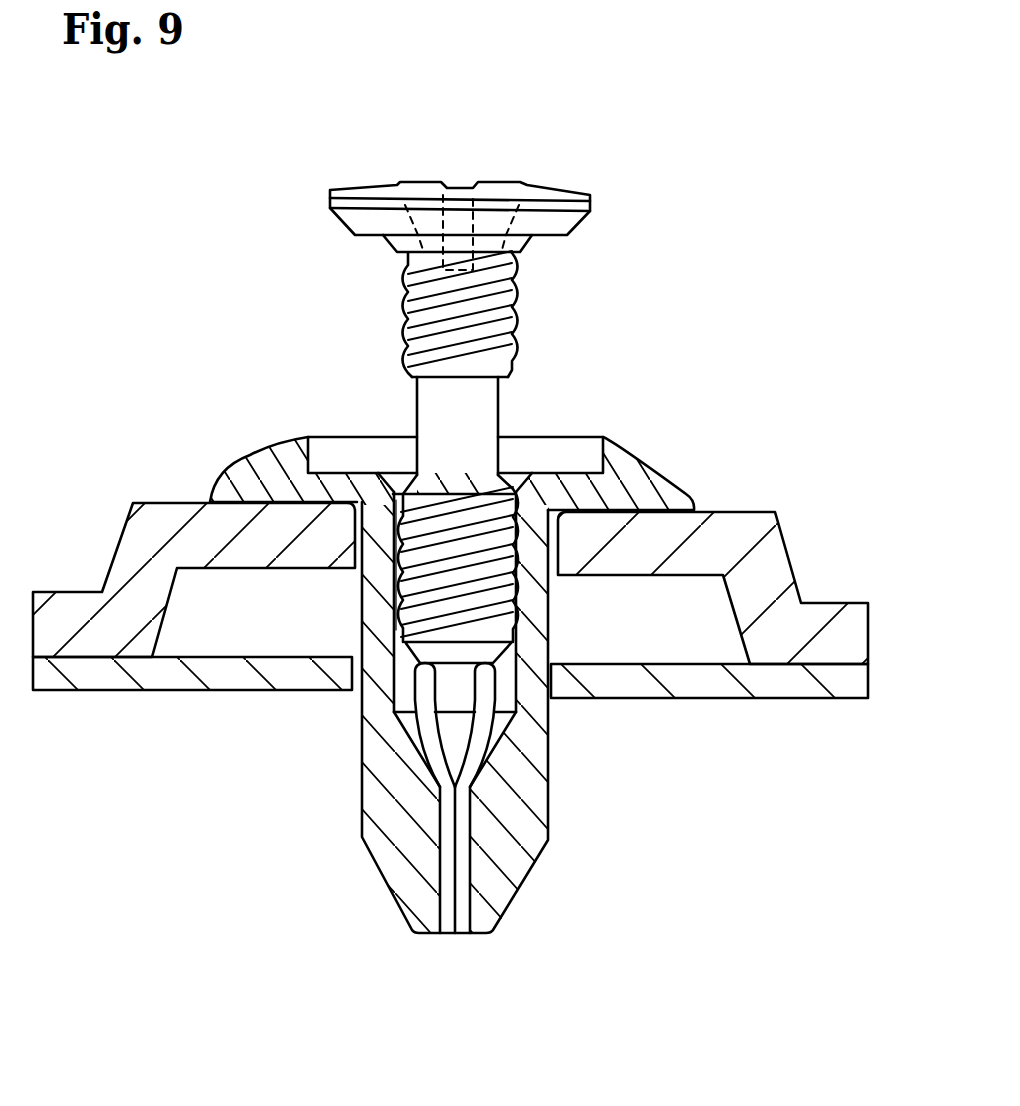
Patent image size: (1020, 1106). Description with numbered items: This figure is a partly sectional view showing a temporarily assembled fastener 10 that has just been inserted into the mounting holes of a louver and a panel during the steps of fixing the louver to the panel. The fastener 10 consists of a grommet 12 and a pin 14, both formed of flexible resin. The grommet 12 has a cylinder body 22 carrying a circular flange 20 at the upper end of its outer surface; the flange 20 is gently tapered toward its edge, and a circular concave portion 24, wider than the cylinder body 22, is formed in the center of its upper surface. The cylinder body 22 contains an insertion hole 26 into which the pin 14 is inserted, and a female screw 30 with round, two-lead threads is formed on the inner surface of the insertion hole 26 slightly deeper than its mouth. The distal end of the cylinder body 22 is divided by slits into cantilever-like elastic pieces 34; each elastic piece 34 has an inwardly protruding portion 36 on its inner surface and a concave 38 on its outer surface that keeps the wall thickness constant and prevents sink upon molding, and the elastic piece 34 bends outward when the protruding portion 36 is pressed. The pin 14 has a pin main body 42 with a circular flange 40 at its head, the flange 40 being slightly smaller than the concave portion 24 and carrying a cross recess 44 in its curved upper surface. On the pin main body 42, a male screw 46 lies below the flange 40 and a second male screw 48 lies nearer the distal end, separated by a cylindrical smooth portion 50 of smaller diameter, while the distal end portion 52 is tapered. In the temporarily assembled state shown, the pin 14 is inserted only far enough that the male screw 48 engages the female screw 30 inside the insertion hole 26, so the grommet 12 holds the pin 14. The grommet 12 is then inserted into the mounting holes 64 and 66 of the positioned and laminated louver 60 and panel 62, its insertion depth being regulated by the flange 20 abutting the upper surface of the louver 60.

The fastener 10 is at (450, 509).
The grommet 12 is at (469, 661).
The pin 14 is at (449, 389).
The flange 20 is at (650, 463).
The cylinder body 22 is at (444, 661).
The circular concave portion 24 is at (350, 470).
The insertion hole 26 is at (500, 480).
The female screw 30 is at (506, 611).
The elastic piece 34 is at (460, 895).
The protruding portion 36 is at (462, 798).
The concave 38 is at (455, 844).
The flange 40 is at (362, 187).
The pin main body 42 is at (474, 505).
The cross recess 44 is at (414, 182).
The male screw 46 is at (410, 314).
The male screw 48 is at (388, 528).
The smooth portion 50 is at (423, 426).
The distal end portion 52 is at (419, 703).
The louver 60 is at (72, 605).
The panel 62 is at (98, 675).
The mounting hole 64 is at (309, 596).
The mounting hole 66 is at (362, 700).